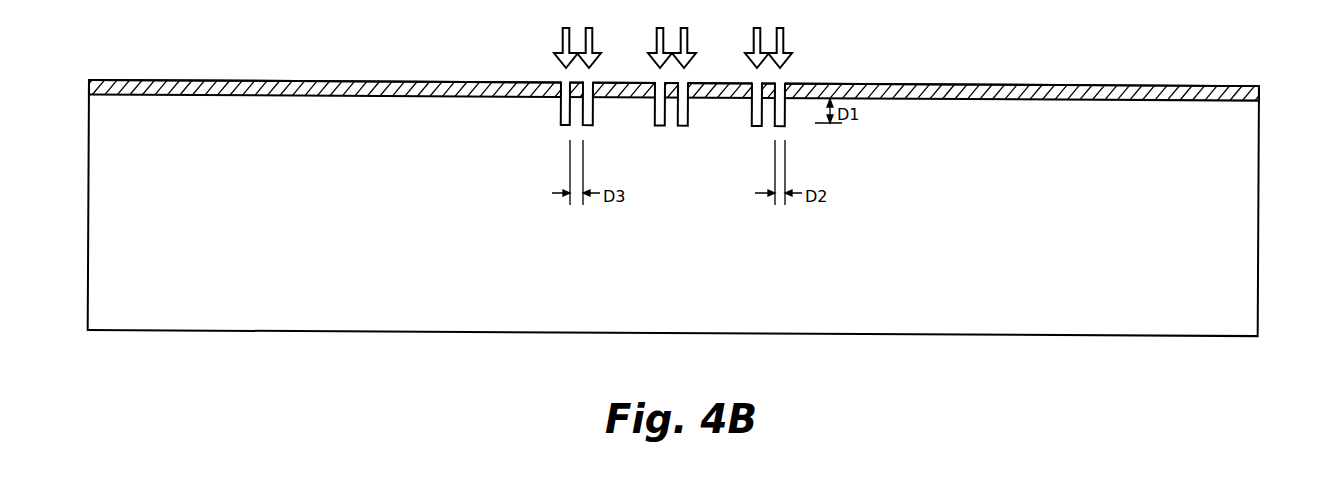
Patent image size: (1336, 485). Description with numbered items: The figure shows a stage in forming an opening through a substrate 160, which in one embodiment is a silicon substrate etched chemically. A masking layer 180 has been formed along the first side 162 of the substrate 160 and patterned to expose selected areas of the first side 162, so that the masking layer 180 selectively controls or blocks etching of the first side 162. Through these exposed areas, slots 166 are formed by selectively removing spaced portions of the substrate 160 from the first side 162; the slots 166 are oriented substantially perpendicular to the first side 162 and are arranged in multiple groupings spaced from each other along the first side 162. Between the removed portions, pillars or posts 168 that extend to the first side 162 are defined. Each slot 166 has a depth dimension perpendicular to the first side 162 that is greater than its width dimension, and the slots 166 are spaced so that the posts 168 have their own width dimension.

The substrate 160 is at (1230, 229).
The first side 162 is at (260, 93).
The slots 166 is at (561, 115).
The posts 168 is at (767, 113).
The masking layer 180 is at (1030, 93).